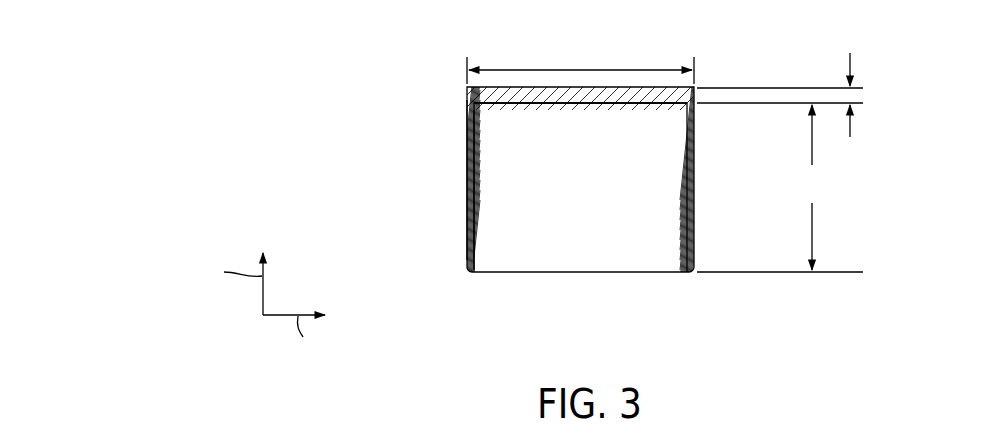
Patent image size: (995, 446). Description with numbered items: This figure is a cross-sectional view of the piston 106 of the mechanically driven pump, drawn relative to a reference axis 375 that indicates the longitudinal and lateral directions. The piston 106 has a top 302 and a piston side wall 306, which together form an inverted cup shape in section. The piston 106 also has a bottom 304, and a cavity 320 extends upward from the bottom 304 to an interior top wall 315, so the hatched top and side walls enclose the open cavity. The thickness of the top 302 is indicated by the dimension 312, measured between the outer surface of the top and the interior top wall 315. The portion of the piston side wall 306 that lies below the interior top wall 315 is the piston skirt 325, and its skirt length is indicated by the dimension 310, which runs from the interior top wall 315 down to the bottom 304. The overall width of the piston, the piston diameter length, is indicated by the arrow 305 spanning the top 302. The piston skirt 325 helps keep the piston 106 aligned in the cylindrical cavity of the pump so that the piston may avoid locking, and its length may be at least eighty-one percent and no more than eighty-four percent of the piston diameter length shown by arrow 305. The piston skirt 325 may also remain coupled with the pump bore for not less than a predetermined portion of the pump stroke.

The piston 106 is at (467, 93).
The top 302 is at (513, 91).
The bottom 304 is at (605, 273).
The arrow indicating piston diameter length 305 is at (632, 68).
The piston side wall 306 is at (467, 178).
The skirt length 310 is at (811, 187).
The top thickness 312 is at (851, 80).
The interior top wall 315 is at (551, 104).
The cavity 320 is at (512, 230).
The piston skirt 325 is at (696, 142).
The reference axis 375 is at (294, 259).